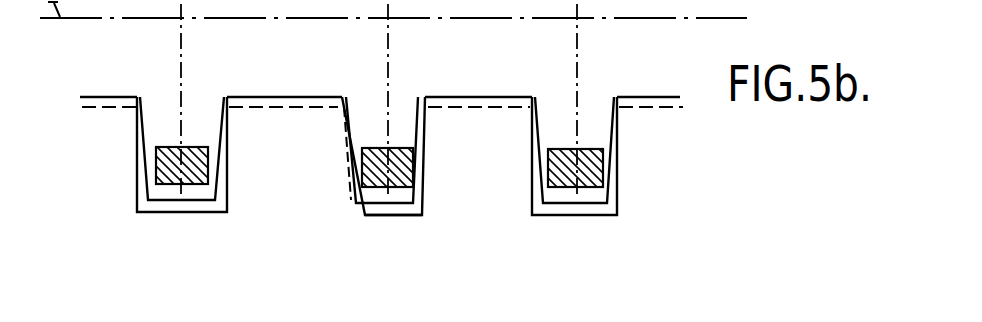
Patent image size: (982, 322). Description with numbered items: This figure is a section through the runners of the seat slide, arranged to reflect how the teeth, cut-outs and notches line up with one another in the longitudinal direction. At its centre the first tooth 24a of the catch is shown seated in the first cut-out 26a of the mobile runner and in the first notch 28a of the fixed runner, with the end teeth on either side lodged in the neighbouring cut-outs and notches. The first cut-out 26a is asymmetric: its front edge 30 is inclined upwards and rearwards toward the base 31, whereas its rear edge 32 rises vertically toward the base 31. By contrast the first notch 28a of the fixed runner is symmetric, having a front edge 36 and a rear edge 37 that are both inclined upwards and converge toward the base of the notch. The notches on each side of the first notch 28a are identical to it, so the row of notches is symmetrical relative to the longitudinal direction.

The first tooth 24a is at (377, 147).
The first cut-out 26a is at (366, 214).
The first notch 28a is at (408, 205).
The front edge 30 is at (352, 170).
The base 31 is at (402, 217).
The rear edge 32 is at (414, 188).
The front edge 36 is at (343, 133).
The rear edge 37 is at (418, 147).